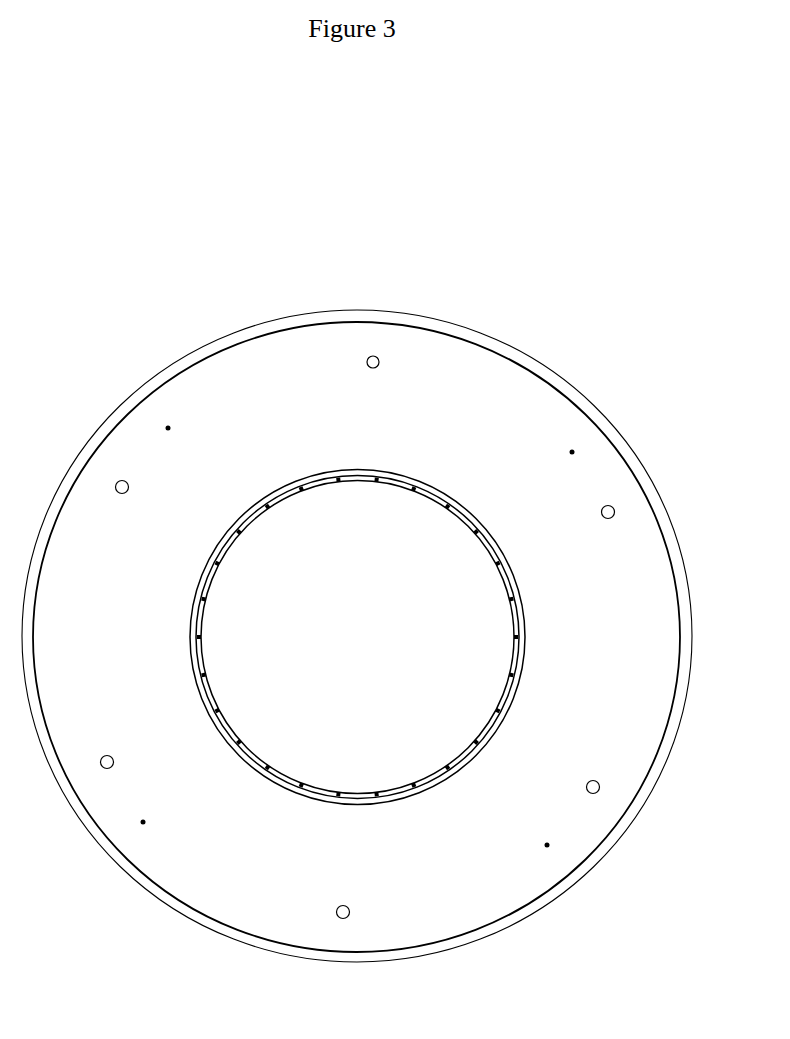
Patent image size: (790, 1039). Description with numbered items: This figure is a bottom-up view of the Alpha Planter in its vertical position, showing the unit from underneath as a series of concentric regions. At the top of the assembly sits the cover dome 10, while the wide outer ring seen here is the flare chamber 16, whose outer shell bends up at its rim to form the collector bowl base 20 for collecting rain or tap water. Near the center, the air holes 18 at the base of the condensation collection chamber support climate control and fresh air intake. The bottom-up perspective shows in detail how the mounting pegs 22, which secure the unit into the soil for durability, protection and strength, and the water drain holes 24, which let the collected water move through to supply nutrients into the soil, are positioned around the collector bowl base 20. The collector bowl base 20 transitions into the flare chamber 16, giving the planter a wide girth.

The cover dome 10 is at (383, 611).
The flare chamber 16 is at (460, 432).
The air holes 18 is at (507, 590).
The collector bowl base 20 is at (257, 362).
The mounting pegs 22 is at (378, 357).
The water drain holes 24 is at (577, 448).